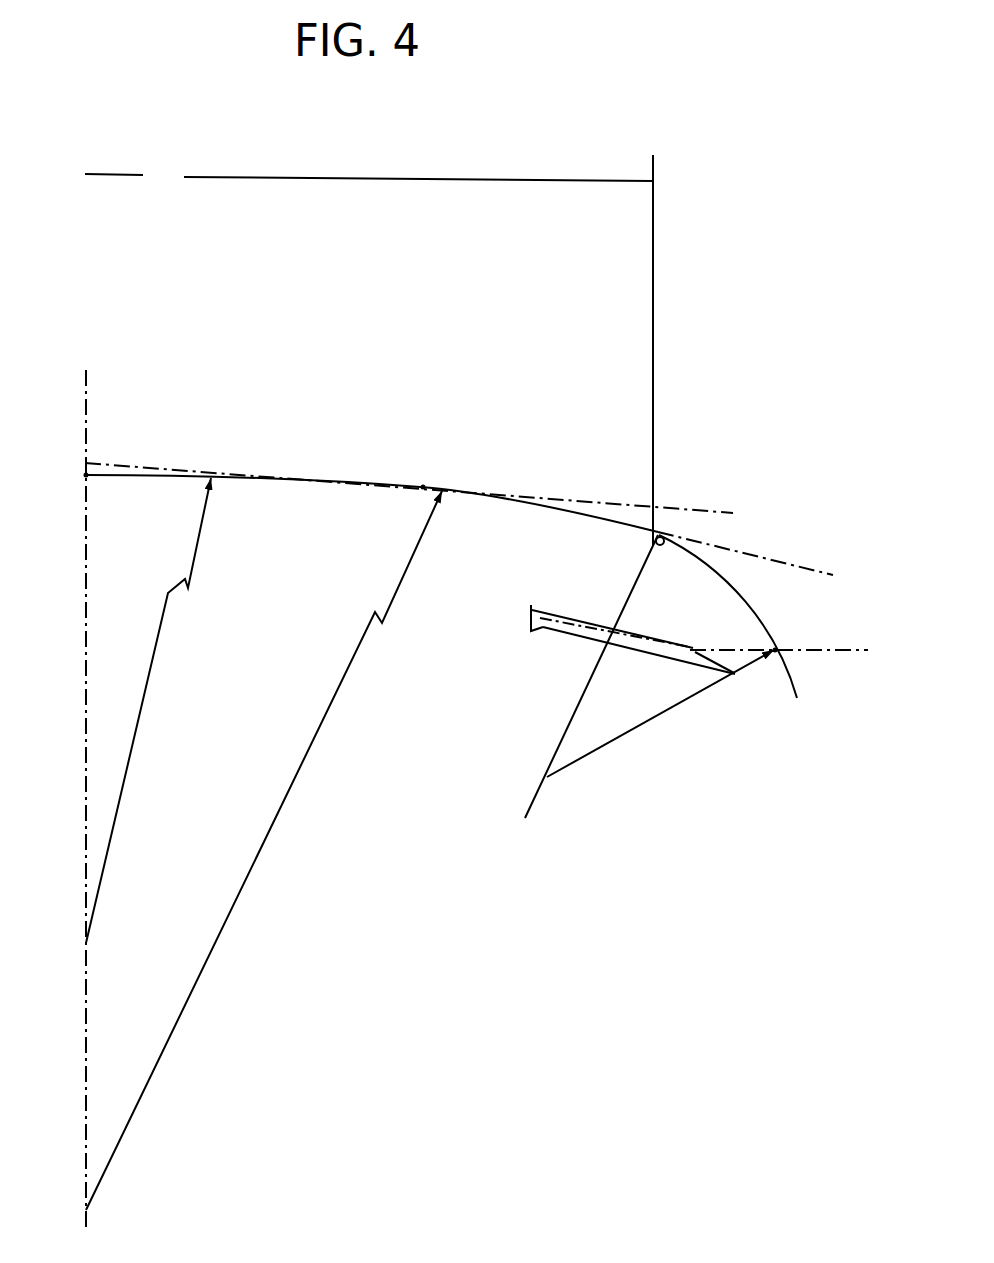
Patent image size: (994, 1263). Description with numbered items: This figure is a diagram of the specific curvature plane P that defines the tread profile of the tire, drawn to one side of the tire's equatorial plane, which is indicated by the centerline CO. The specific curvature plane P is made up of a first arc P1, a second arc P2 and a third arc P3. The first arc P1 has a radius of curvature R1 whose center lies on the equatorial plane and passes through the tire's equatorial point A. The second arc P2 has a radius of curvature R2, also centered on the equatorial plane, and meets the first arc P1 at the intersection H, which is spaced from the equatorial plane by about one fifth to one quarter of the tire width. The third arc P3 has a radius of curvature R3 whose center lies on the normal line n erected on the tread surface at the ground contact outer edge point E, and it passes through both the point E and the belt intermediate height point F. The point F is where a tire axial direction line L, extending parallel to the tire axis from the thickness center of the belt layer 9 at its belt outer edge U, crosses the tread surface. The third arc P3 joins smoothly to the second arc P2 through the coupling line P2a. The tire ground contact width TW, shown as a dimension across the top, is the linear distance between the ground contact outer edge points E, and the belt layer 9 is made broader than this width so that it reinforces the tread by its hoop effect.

The tire ground contact width TW is at (368, 178).
The tire equatorial center line CO is at (87, 424).
The tire's equatorial point A is at (76, 470).
The specific curvature plane P is at (475, 503).
The first arc P1 is at (263, 478).
The second arc P2 is at (520, 500).
The coupling line P2a is at (618, 511).
The third arc P3 is at (751, 614).
The intersection H is at (423, 478).
The ground contact outer edge point E is at (664, 528).
The belt outer edge U is at (703, 635).
The belt layer 9 is at (649, 671).
The belt intermediate height point F is at (797, 663).
The tire axial direction line L is at (848, 652).
The radius of curvature of first arc R1 is at (152, 660).
The radius of curvature of second arc R2 is at (331, 702).
The radius of curvature of third arc R3 is at (653, 717).
The normal line n is at (578, 702).